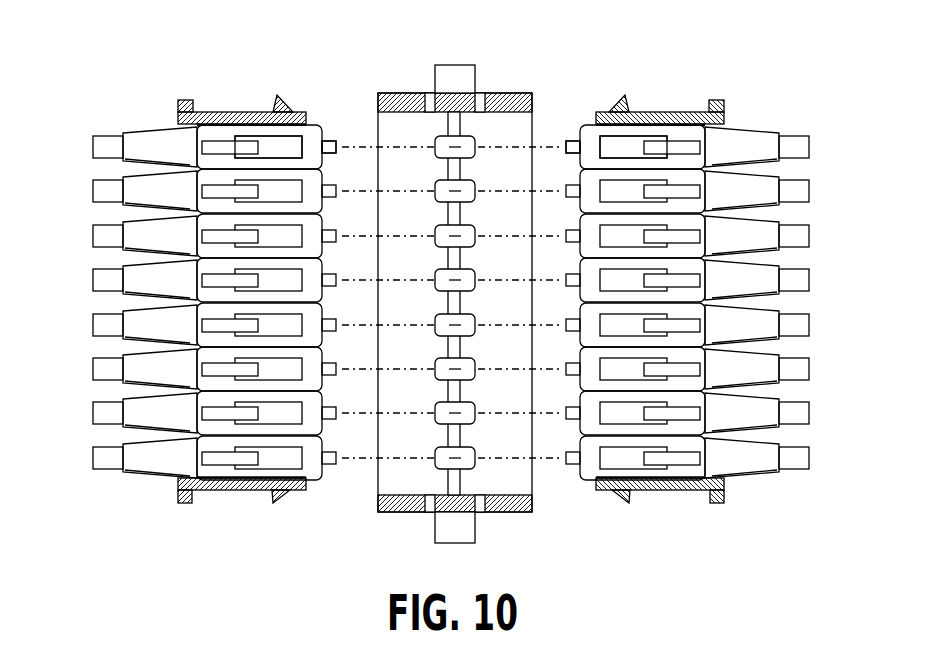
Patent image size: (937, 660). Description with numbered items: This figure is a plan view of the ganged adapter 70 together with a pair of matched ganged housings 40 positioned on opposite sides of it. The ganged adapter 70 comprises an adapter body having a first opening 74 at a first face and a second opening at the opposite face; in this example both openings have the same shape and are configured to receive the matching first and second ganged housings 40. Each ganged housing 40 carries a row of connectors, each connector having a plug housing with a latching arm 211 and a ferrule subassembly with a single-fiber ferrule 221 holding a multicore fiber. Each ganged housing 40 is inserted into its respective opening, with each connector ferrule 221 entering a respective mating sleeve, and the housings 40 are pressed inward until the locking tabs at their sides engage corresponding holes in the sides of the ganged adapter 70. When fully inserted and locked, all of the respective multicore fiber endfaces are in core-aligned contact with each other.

The latching arm 211 is at (290, 156).
The single-fiber ferrule 221 is at (330, 140).
The ganged housing 40 is at (245, 112).
The ganged adapter 70 is at (465, 50).
The first opening 74 is at (495, 140).